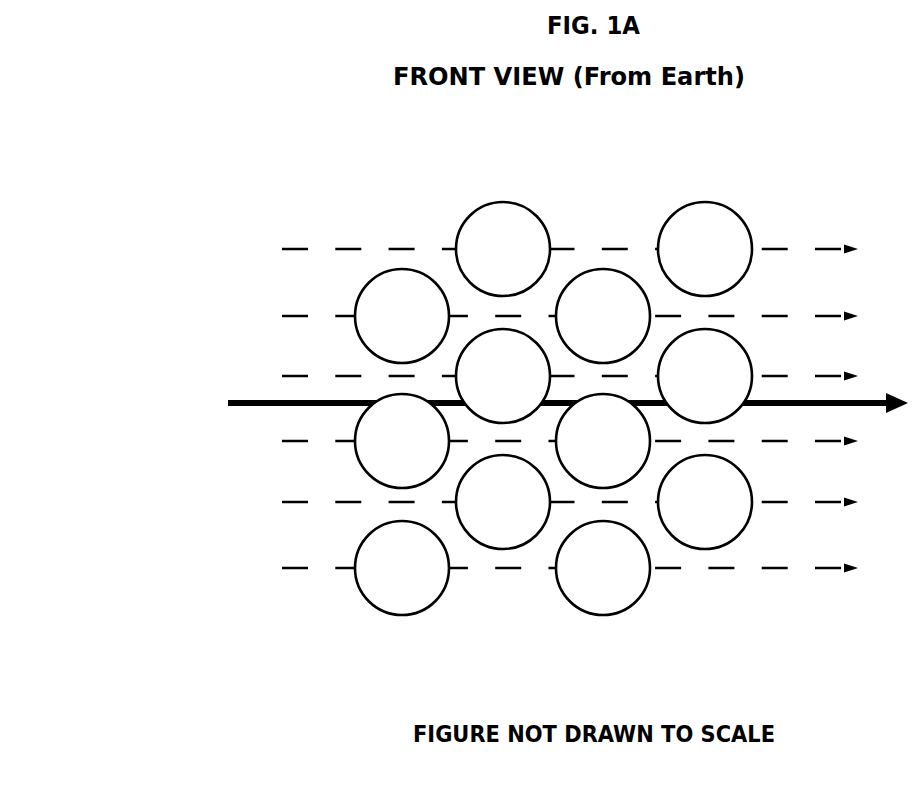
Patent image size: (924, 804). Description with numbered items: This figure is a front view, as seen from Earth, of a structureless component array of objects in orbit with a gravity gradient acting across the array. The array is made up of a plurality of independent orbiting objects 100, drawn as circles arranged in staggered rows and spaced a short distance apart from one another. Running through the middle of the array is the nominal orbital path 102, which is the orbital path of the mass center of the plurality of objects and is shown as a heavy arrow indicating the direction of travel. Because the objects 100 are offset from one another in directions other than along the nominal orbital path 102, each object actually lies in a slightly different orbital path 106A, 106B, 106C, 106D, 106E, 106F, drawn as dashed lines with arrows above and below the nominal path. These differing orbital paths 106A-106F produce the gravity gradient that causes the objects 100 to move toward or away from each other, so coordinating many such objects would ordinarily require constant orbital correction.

The independent orbiting objects 100 is at (740, 192).
The nominal orbital path 102 is at (238, 398).
The orbital path 106A is at (298, 572).
The orbital path 106B is at (298, 506).
The orbital path 106C is at (298, 445).
The orbital path 106D is at (298, 372).
The orbital path 106E is at (298, 312).
The orbital path 106F is at (298, 245).